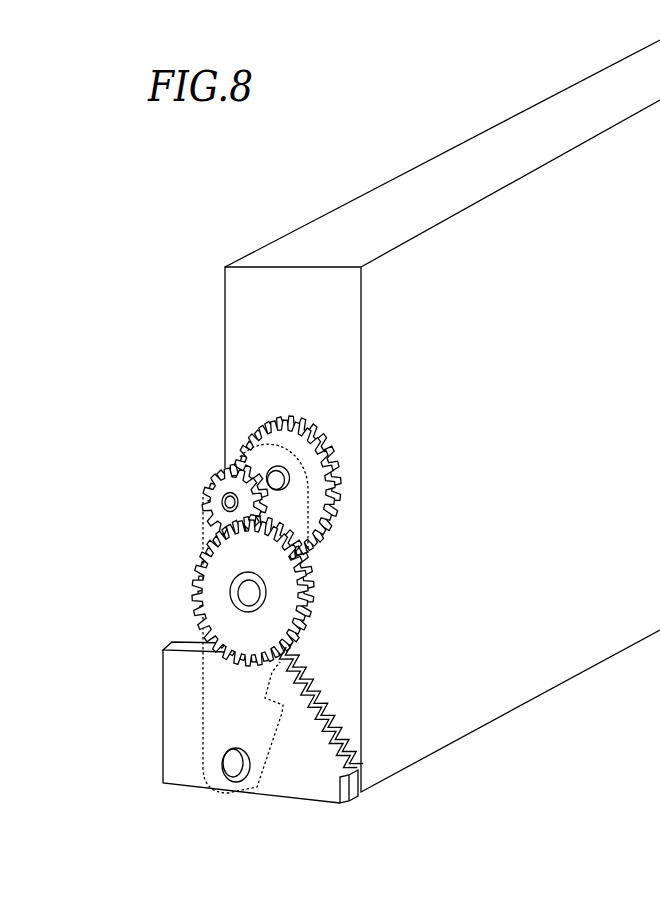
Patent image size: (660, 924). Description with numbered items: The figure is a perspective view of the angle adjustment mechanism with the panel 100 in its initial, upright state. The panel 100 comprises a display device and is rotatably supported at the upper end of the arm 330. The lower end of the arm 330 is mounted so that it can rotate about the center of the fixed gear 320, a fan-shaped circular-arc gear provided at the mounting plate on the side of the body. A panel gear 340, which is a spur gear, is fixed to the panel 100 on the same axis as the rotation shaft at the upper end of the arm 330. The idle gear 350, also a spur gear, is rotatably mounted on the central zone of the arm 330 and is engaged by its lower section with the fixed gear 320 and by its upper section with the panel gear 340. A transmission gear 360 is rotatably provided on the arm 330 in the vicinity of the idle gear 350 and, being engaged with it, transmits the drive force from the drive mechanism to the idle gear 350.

The panel 100 is at (465, 147).
The fixed gear 320 is at (357, 758).
The arm 330 is at (203, 628).
The panel gear 340 is at (258, 421).
The idle gear 350 is at (193, 581).
The transmission gear 360 is at (207, 493).